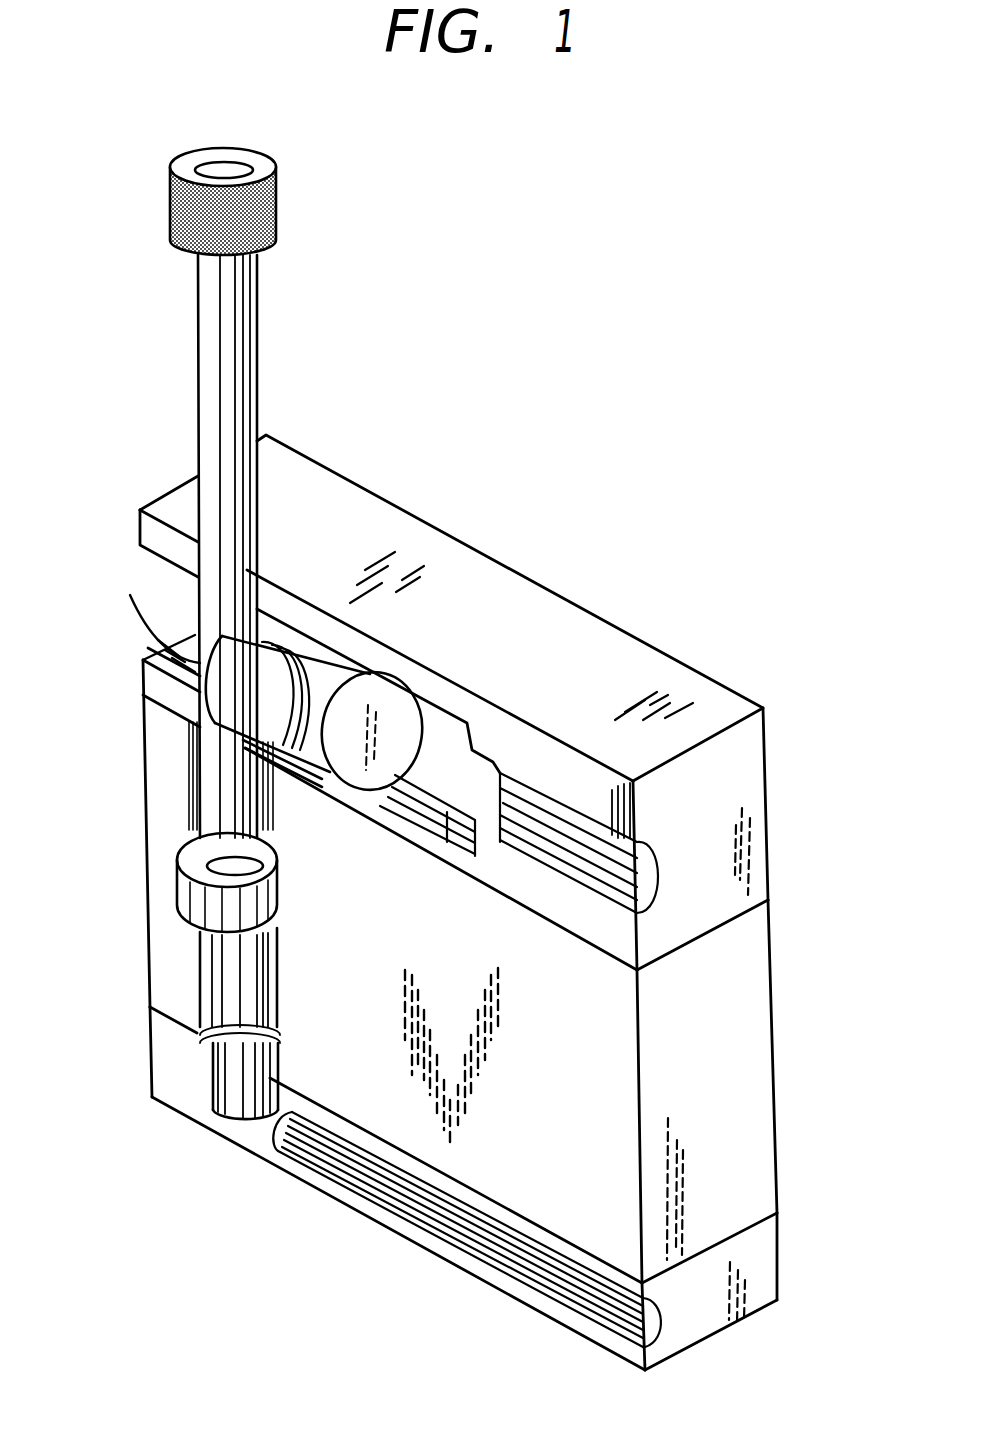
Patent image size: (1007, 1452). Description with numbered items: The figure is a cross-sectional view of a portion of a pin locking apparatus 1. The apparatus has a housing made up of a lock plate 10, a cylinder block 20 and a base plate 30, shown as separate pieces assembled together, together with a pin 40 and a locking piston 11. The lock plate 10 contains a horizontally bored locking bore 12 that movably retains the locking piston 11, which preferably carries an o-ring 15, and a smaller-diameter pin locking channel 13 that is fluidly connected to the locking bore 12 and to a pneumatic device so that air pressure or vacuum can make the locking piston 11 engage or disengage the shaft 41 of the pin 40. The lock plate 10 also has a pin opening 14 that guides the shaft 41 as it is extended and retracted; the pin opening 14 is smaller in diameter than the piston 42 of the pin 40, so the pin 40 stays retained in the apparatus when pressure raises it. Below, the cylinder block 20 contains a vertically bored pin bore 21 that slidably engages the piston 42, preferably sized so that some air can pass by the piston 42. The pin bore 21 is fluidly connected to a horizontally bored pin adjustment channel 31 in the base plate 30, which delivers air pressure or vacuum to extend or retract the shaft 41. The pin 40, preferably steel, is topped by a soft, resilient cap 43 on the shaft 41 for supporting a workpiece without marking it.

The pin locking apparatus 1 is at (746, 284).
The lock plate 10 is at (747, 803).
The locking piston 11 is at (364, 790).
The locking bore 12 is at (452, 805).
The pin locking channel 13 is at (596, 865).
The pin opening 14 is at (175, 658).
The o-ring 15 is at (290, 672).
The cylinder block 20 is at (760, 1063).
The pin bore 21 is at (223, 977).
The base plate 30 is at (762, 1265).
The pin adjustment channel 31 is at (428, 1247).
The pin 40 is at (160, 403).
The shaft 41 is at (237, 360).
The piston 42 is at (193, 899).
The cap 43 is at (281, 190).